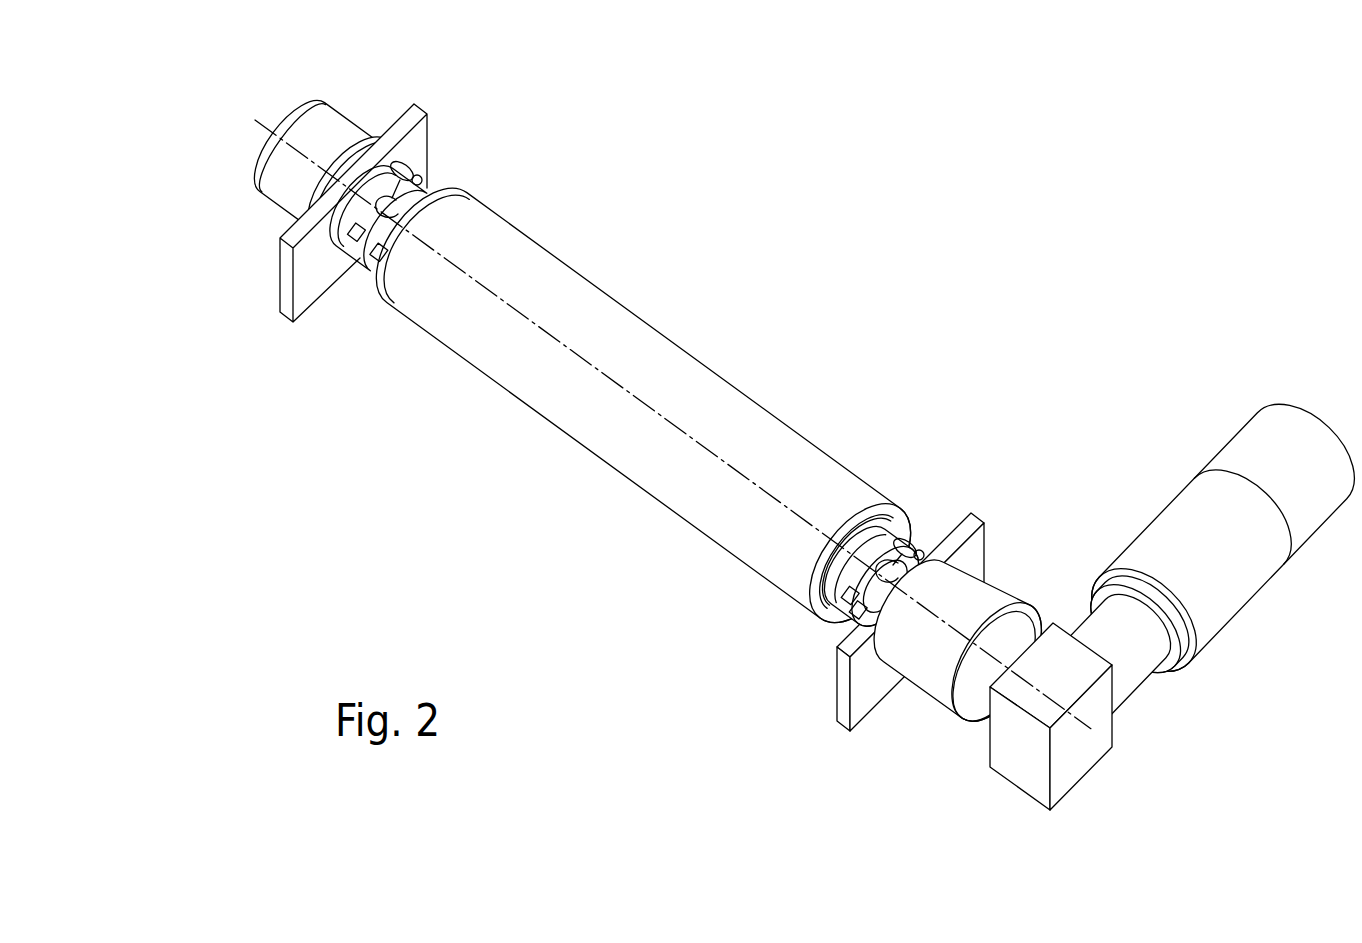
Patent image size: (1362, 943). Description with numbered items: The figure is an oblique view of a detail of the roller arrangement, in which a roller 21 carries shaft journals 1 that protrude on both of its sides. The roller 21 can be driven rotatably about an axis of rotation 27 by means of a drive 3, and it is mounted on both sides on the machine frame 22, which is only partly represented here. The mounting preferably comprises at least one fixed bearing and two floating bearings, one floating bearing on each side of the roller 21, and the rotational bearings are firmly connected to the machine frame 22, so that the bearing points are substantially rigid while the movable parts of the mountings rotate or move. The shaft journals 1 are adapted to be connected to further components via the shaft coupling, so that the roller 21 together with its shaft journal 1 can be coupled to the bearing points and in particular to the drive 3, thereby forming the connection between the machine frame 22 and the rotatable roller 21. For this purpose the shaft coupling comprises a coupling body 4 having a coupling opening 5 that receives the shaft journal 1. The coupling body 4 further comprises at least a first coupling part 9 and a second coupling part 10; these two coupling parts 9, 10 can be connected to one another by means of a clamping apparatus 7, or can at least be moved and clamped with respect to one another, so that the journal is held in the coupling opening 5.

The shaft journal 1 is at (405, 232).
The drive 3 is at (1240, 558).
The coupling body 4 is at (432, 182).
The coupling opening 5 is at (427, 218).
The clamping apparatus 7 is at (404, 183).
The first coupling part 9 is at (377, 252).
The second coupling part 10 is at (355, 238).
The roller 21 is at (680, 474).
The machine frame 22 is at (307, 267).
The axis of rotation 27 is at (608, 381).